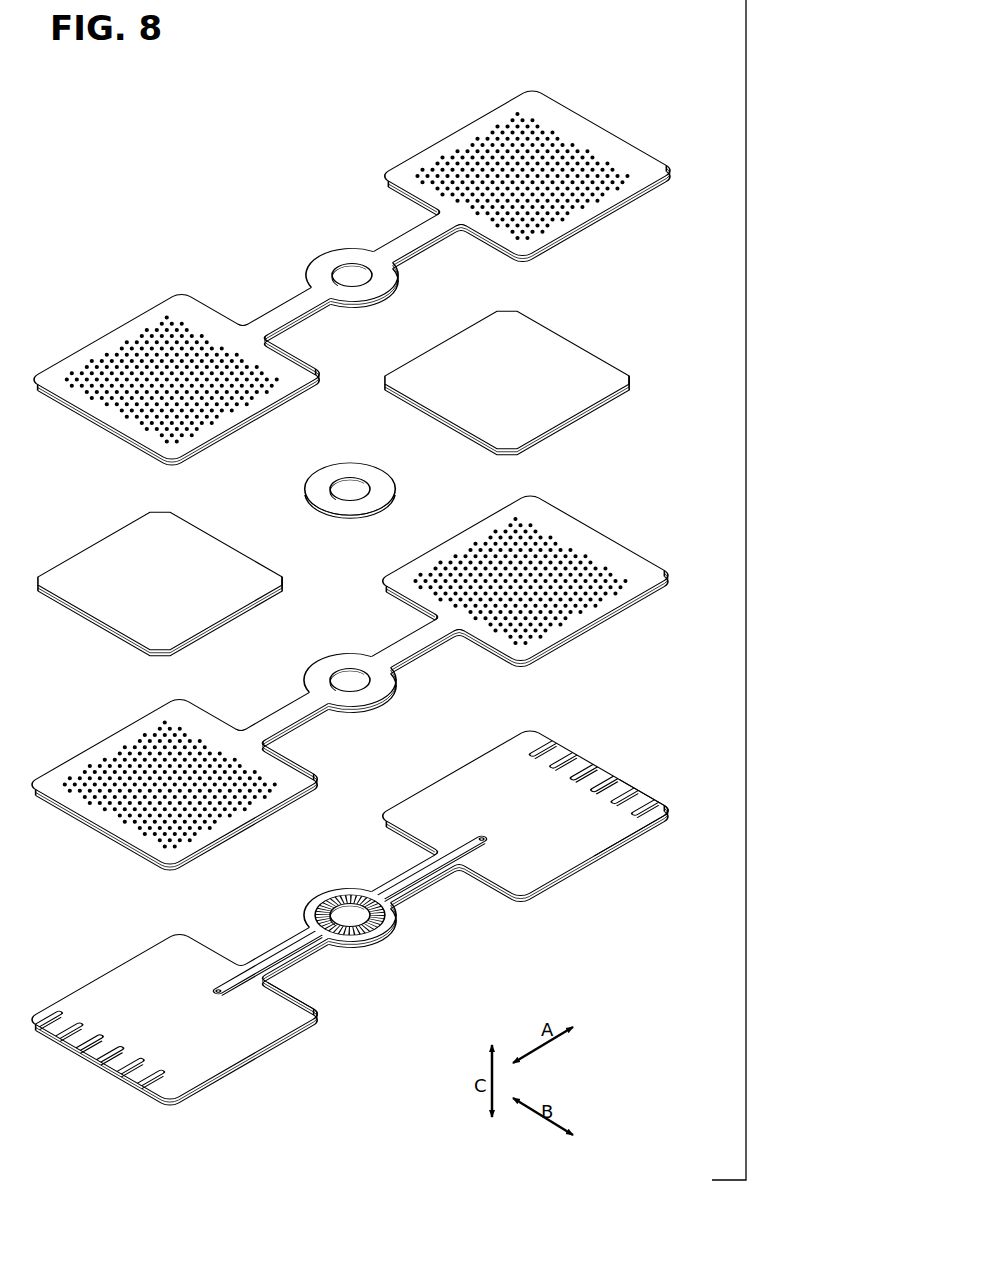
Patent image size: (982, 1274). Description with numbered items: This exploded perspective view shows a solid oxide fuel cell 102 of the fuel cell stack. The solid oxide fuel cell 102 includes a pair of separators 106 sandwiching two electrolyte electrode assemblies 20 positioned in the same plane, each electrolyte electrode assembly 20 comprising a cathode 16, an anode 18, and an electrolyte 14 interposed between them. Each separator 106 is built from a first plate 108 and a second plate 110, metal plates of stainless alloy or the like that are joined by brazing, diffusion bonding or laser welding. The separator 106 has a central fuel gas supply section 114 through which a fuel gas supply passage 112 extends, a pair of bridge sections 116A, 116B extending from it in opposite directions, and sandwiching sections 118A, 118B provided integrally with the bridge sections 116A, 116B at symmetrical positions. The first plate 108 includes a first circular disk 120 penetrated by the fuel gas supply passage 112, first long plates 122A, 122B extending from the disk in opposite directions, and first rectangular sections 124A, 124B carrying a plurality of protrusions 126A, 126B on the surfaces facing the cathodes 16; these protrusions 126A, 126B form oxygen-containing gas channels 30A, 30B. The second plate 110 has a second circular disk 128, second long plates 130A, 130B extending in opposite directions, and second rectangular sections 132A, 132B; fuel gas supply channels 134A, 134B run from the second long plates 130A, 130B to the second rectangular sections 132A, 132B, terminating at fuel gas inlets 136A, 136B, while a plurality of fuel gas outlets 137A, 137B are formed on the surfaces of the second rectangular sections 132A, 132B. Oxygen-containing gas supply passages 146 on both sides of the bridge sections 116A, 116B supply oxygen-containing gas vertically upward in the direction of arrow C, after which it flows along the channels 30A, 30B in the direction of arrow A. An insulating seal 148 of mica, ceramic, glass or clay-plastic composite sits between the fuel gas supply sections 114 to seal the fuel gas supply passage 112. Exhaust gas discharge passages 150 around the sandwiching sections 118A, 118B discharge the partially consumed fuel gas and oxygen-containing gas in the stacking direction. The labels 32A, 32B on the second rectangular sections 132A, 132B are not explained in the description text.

The solid oxide fuel cell 102 is at (331, 66).
The separator 106 is at (98, 322).
The first plate 108 is at (622, 622).
The second plate 110 is at (600, 745).
The fuel gas supply passage 112 is at (352, 268).
The fuel gas supply section 114 is at (318, 265).
The bridge section 116A is at (402, 270).
The bridge section 116B is at (300, 306).
The sandwiching section 118A is at (408, 150).
The sandwiching section 118B is at (180, 284).
The first circular disk 120 is at (326, 664).
The first long plate 122A is at (406, 662).
The first long plate 122B is at (298, 708).
The first rectangular section 124A is at (522, 566).
The first rectangular section 124B is at (168, 781).
The protrusions 126A is at (447, 556).
The protrusions 126B is at (52, 780).
The second circular disk 128 is at (332, 890).
The second long plate 130A is at (424, 865).
The second long plate 130B is at (256, 969).
The second rectangular section 132A is at (529, 825).
The second rectangular section 132B is at (177, 1024).
The fuel gas supply channel 134A is at (406, 896).
The fuel gas supply channel 134B is at (248, 974).
The fuel gas inlet 136A is at (487, 833).
The fuel gas inlet 136B is at (211, 1002).
The fuel gas outlets 137A is at (648, 806).
The fuel gas outlets 137B is at (120, 1083).
The oxygen-containing gas supply passage 146 is at (388, 238).
The insulating seal 148 is at (332, 477).
The exhaust gas discharge passage 150 is at (625, 536).
The electrolyte 14 is at (160, 598).
The cathode 16 is at (137, 641).
The anode 18 is at (160, 598).
The electrolyte electrode assembly 20 is at (582, 338).
The oxygen-containing gas channel 30A is at (505, 565).
The oxygen-containing gas channel 30B is at (161, 768).
The pad region 32A is at (616, 840).
The pad region 32B is at (252, 1052).